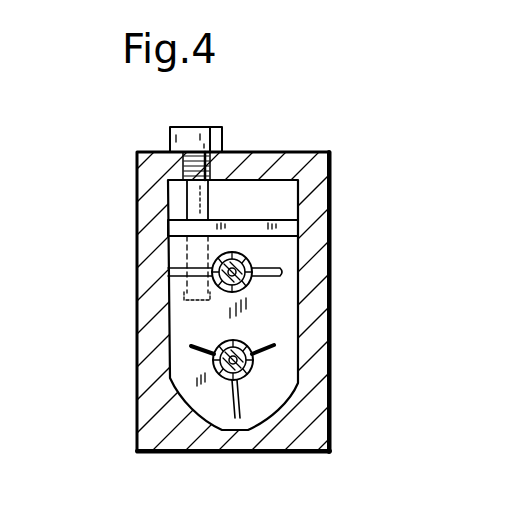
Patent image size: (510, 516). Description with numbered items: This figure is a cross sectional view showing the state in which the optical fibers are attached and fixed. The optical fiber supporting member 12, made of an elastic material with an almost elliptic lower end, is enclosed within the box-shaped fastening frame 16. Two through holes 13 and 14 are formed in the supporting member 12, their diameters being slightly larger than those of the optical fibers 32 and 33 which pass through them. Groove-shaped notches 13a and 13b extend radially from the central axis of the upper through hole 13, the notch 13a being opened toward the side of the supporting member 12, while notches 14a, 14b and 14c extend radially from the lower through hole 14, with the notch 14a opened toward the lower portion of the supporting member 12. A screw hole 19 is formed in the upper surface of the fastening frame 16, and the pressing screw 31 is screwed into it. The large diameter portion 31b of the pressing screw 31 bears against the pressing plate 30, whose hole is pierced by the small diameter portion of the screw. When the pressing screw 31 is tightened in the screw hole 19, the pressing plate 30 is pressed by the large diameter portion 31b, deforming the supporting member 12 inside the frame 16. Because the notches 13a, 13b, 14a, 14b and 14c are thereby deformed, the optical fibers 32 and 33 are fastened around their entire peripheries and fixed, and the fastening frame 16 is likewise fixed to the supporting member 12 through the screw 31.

The optical fiber supporting member 12 is at (183, 312).
The through hole 13 is at (250, 287).
The notch 13a is at (168, 272).
The notch 13b is at (283, 272).
The through hole 14 is at (187, 385).
The notch 14a is at (238, 419).
The notch 14b is at (190, 348).
The notch 14c is at (265, 351).
The fastening frame 16 is at (310, 153).
The screw hole 19 is at (183, 165).
The pressing plate 30 is at (287, 220).
The pressing screw 31 is at (168, 133).
The large diameter portion 31b is at (172, 195).
The optical fiber 32 is at (247, 291).
The optical fiber 33 is at (253, 374).